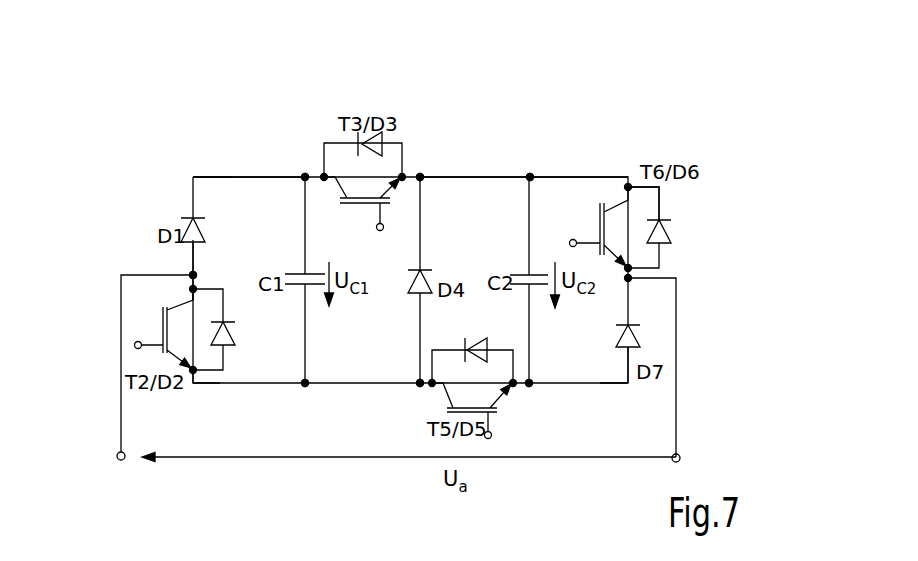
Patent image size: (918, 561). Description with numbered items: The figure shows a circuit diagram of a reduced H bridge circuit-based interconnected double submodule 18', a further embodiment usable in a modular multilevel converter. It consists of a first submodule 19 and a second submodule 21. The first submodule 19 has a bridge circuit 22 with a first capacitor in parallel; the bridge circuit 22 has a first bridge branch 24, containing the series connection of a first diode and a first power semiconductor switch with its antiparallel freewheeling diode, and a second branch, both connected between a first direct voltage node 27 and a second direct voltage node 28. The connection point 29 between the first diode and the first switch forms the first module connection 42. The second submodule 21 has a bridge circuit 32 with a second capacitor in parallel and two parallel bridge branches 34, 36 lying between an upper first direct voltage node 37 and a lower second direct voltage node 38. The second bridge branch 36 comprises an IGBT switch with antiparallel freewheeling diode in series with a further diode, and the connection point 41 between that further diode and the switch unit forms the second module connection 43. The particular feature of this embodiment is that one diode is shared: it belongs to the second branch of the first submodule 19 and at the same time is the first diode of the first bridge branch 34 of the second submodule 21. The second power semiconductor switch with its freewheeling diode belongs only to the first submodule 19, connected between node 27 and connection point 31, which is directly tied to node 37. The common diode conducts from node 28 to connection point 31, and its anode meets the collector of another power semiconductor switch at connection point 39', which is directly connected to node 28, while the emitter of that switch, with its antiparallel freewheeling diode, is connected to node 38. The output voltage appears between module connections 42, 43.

The double submodule 18' is at (125, 177).
The first submodule 19 is at (186, 167).
The second submodule 21 is at (700, 160).
The bridge circuit 22 is at (150, 401).
The first bridge branch 24 is at (232, 177).
The first direct voltage node 27 is at (305, 177).
The second direct voltage node 28 is at (305, 383).
The connection point 29 is at (190, 274).
The connection point 31 is at (420, 177).
The bridge circuit 32 is at (631, 397).
The first bridge branch 34 is at (470, 177).
The second bridge branch 36 is at (582, 177).
The first direct voltage node 37 is at (530, 177).
The second direct voltage node 38 is at (527, 384).
The connection point 39' is at (397, 454).
The connection point 41 is at (640, 276).
The first module connection 42 is at (117, 461).
The second module connection 43 is at (681, 460).